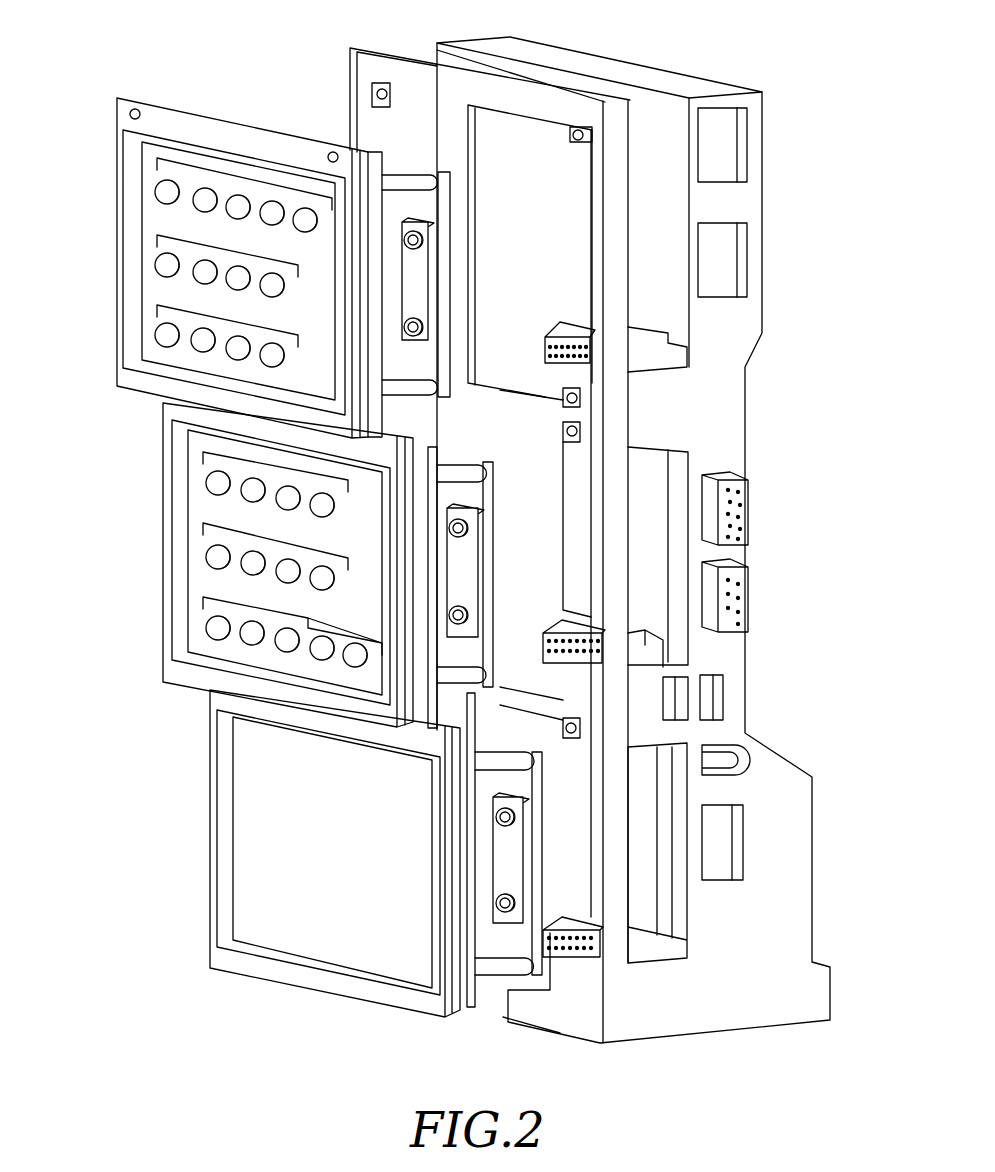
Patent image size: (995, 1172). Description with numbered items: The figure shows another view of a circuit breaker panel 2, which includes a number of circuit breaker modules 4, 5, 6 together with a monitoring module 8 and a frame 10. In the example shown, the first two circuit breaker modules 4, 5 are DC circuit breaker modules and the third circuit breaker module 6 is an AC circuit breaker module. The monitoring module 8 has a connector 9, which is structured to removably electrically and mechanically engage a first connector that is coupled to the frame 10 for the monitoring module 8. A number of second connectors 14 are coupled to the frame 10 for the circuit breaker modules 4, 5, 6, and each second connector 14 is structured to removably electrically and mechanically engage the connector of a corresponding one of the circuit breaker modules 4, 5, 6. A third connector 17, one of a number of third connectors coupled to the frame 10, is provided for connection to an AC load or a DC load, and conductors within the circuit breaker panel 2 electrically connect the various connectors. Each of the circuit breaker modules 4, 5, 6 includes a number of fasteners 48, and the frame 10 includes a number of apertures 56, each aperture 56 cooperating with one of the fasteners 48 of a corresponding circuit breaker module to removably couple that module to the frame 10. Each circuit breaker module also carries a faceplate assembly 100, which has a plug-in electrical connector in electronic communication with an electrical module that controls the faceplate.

The circuit breaker panel 2 is at (239, 1034).
The circuit breaker module 4 is at (100, 221).
The circuit breaker module 5 is at (147, 508).
The circuit breaker module 6 is at (194, 800).
The monitoring module 8 is at (643, 897).
The connector 9 is at (571, 740).
The frame 10 is at (517, 74).
The second connector 14 is at (547, 333).
The third connector 17 is at (740, 506).
The fastener 48 is at (128, 115).
The aperture 56 is at (378, 84).
The faceplate assembly 100 is at (160, 283).